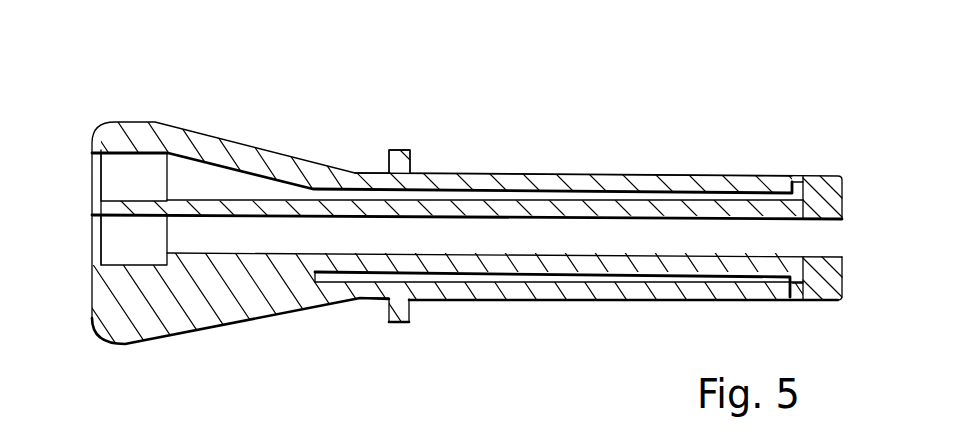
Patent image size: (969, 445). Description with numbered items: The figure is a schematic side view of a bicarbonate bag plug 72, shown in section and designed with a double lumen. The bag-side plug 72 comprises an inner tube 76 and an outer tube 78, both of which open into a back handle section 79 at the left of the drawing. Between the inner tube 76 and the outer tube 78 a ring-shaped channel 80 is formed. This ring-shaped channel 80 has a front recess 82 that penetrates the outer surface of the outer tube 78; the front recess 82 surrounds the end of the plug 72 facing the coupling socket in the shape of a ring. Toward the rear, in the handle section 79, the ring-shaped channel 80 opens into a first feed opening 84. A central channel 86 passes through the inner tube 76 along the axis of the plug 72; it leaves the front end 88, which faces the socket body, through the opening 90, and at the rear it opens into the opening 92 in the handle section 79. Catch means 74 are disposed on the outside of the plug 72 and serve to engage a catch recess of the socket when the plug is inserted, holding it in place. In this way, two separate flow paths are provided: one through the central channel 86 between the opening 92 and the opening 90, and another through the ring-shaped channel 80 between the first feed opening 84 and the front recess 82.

The bag-side plug 72 is at (280, 348).
The catch means 74 is at (400, 152).
The inner tube 76 is at (562, 262).
The outer tube 78 is at (547, 182).
The handle section 79 is at (191, 133).
The ring-shaped channel 80 is at (361, 193).
The front recess 82 is at (798, 178).
The first feed opening 84 is at (120, 183).
The central channel 86 is at (368, 238).
The front end 88 is at (847, 200).
The opening 90 is at (840, 238).
The opening 92 is at (118, 236).